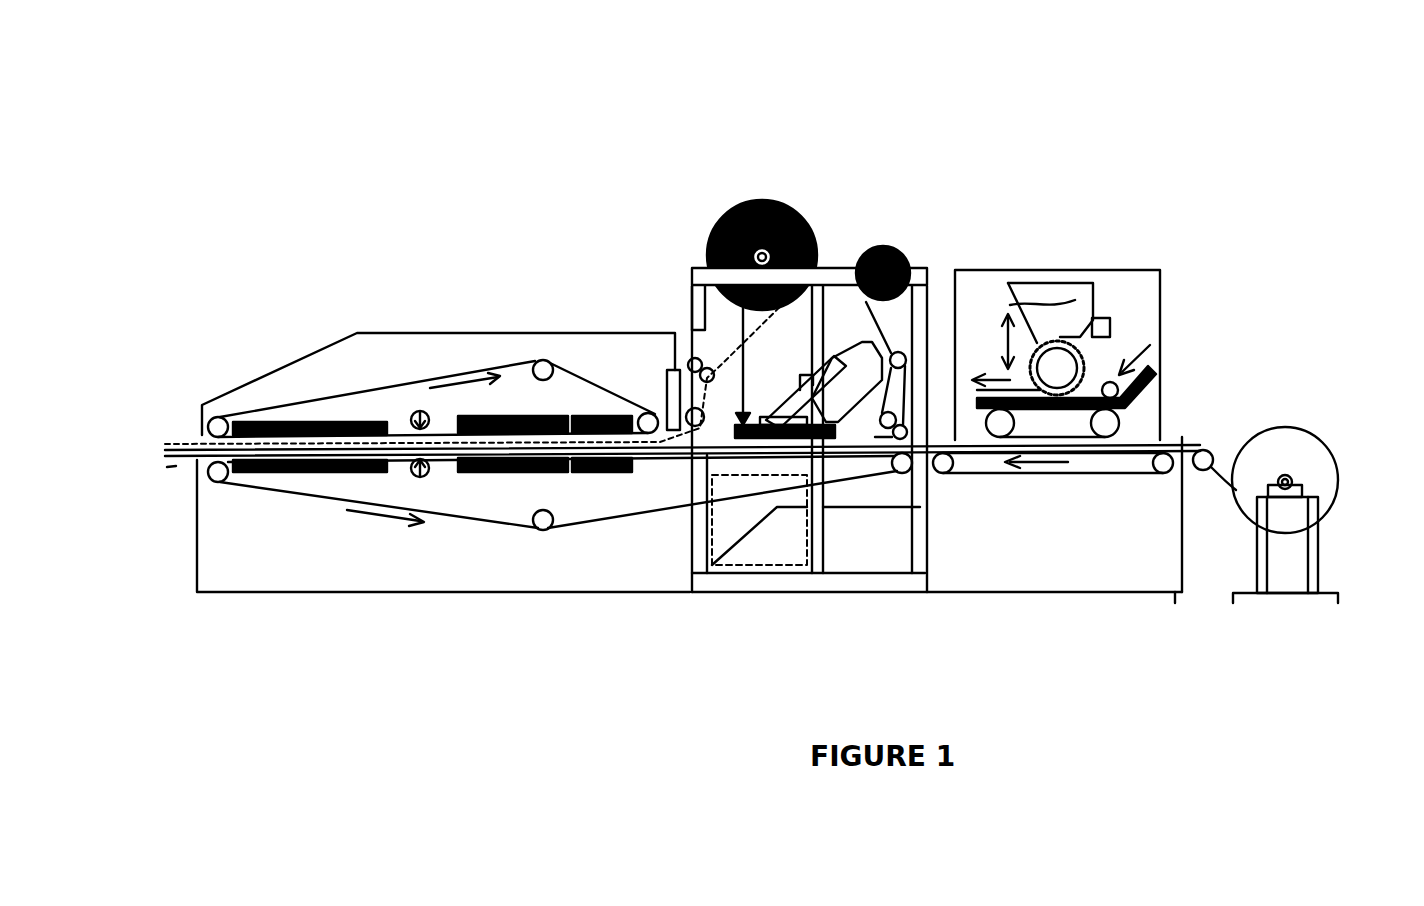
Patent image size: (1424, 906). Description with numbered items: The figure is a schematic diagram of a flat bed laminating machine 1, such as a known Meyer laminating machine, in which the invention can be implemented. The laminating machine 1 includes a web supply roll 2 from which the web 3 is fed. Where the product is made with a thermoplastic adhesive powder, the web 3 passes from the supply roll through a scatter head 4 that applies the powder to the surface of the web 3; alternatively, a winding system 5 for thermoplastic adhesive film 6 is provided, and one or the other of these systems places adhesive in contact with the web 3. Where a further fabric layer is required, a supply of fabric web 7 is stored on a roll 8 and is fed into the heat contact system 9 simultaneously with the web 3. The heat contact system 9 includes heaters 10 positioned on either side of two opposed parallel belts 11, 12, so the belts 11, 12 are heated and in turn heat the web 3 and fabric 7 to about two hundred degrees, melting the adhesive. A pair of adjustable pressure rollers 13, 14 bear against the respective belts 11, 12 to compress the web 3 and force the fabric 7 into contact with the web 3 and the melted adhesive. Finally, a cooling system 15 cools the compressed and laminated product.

The laminating machine 1 is at (689, 553).
The web supply roll 2 is at (1332, 472).
The web 3 is at (1182, 440).
The scatter head 4 is at (1050, 265).
The winding system 5 is at (900, 247).
The thermoplastic adhesive film 6 is at (893, 333).
The fabric web 7 is at (723, 365).
The roll 8 is at (743, 200).
The heat contact system 9 is at (416, 320).
The heaters 10 is at (507, 415).
The belt 11 is at (330, 392).
The belt 12 is at (307, 497).
The pressure roller 13 is at (420, 408).
The pressure roller 14 is at (420, 478).
The cooling system 15 is at (248, 425).